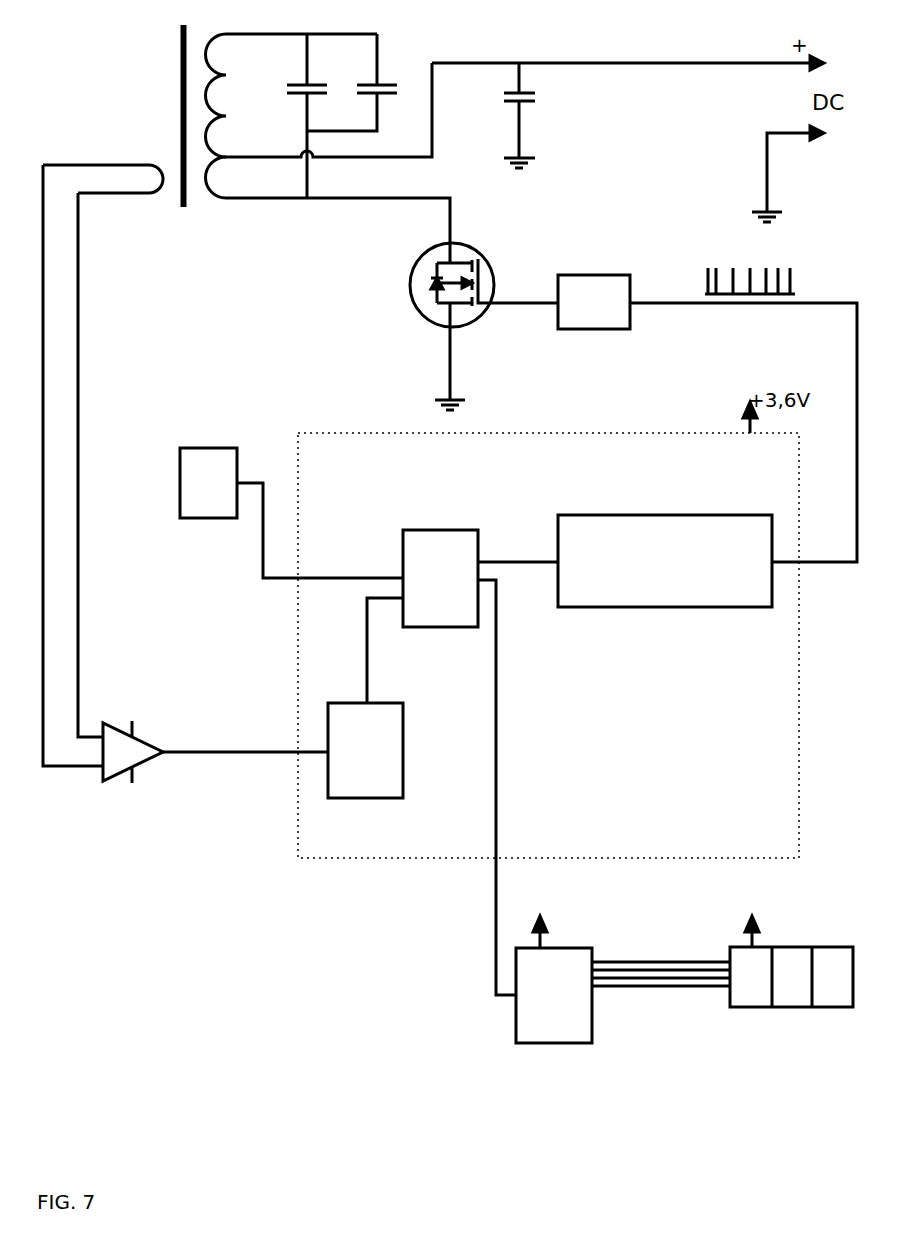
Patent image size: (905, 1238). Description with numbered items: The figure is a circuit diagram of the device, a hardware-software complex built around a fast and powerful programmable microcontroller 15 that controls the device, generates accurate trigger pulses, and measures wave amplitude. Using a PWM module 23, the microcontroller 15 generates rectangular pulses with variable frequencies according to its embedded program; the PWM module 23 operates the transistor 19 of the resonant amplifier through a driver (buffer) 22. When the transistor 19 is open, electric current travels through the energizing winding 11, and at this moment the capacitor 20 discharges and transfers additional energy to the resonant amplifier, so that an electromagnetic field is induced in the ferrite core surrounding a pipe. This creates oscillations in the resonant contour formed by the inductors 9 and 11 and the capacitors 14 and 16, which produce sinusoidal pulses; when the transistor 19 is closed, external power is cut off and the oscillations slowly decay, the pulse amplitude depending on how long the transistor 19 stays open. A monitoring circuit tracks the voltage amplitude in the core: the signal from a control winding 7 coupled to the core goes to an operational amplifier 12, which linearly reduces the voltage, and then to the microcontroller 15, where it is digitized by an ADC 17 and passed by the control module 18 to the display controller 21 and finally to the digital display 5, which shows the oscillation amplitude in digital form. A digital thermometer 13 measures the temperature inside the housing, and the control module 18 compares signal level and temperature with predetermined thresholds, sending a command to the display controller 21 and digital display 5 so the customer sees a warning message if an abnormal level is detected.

The inductor 9 is at (292, 95).
The energizing winding 11 is at (328, 200).
The capacitor 14 is at (321, 116).
The capacitor 16 is at (361, 82).
The capacitor 20 is at (543, 115).
The control winding 7 is at (103, 198).
The transistor 19 is at (484, 315).
The driver (buffer) 22 is at (594, 302).
The programmable microcontroller 15 is at (548, 645).
The digital thermometer 13 is at (208, 508).
The control module 18 is at (440, 578).
The PWM module 23 is at (665, 561).
The ADC (analog-digital converter) 17 is at (365, 750).
The operational amplifier 12 is at (185, 494).
The display controller 21 is at (566, 978).
The digital display 5 is at (791, 981).